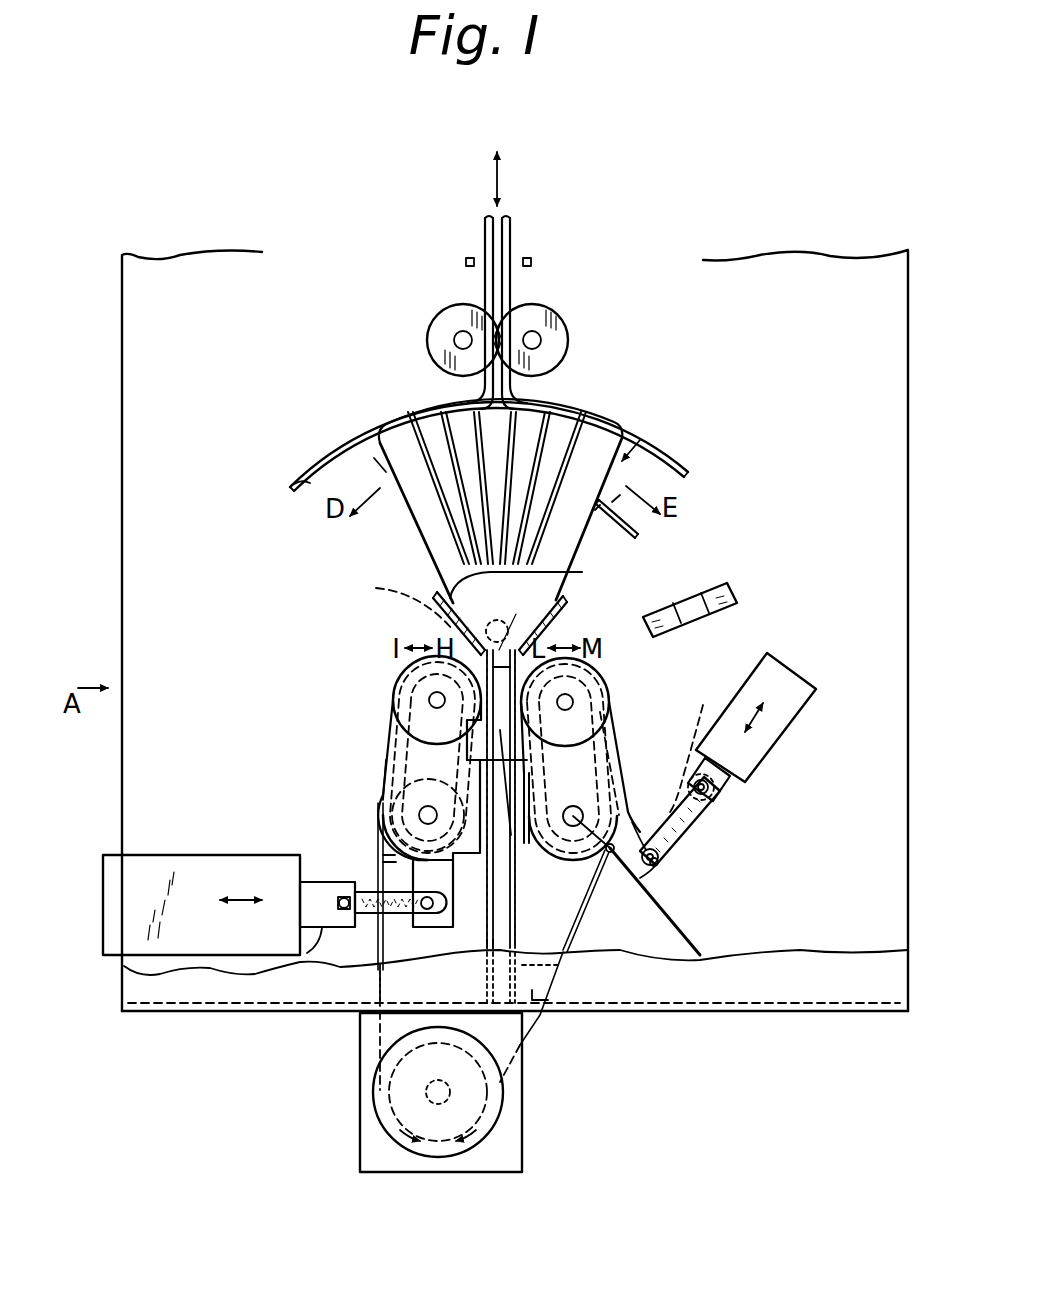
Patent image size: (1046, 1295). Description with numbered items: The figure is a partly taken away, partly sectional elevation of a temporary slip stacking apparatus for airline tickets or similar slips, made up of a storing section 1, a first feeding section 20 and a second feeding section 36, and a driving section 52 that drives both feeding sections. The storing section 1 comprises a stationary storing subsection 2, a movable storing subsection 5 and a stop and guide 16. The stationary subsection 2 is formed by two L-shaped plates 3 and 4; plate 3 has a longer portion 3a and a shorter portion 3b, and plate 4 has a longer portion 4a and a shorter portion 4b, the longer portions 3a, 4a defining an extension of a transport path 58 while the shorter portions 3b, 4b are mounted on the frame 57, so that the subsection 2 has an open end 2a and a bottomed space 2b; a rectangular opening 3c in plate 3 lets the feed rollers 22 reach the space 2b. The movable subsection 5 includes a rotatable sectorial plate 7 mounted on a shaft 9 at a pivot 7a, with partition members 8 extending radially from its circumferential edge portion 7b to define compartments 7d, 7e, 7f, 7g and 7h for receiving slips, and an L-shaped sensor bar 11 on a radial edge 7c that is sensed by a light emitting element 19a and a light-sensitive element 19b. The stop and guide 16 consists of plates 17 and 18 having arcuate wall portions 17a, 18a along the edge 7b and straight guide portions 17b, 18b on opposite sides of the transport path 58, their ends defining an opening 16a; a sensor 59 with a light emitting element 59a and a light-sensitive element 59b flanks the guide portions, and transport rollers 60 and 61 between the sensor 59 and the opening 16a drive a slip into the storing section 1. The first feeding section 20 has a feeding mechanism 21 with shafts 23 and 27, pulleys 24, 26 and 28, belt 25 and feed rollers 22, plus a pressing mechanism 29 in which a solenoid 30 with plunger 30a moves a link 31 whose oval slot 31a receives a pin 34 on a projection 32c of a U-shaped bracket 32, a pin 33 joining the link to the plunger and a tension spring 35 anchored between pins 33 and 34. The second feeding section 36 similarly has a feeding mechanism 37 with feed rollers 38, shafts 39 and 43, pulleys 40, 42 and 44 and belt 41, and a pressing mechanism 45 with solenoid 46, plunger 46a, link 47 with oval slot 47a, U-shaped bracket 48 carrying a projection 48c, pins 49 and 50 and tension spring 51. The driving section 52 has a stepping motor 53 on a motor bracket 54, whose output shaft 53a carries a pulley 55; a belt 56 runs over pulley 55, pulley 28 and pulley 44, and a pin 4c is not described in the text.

The storing section 1 is at (746, 419).
The stationary storing subsection 2 is at (618, 570).
The open end 2a is at (526, 620).
The bottomed space 2b is at (562, 966).
The plate 3 is at (582, 580).
The longer portion 3a is at (484, 926).
The shorter portion 3b is at (478, 1000).
The rectangular opening 3c is at (516, 892).
The plate 4 is at (545, 606).
The longer portion 4a is at (518, 922).
The shorter portion 4b is at (548, 1000).
The pivot pin 4c is at (606, 860).
The movable storing subsection 5 is at (640, 440).
The sectorial plate 7 is at (412, 493).
The pivot 7a is at (459, 620).
The circumferential edge portion 7b is at (594, 418).
The radial edge 7c is at (643, 541).
The compartment 7d is at (563, 415).
The compartment 7e is at (577, 400).
The compartment 7f is at (487, 400).
The compartment 7g is at (470, 408).
The compartment 7h is at (400, 410).
The partition members 8 is at (440, 500).
The rotatable shaft 9 is at (800, 520).
The sensor bar 11 is at (605, 515).
The stop and guide 16 is at (608, 240).
The opening 16a is at (480, 396).
The plate 17 is at (494, 280).
The arcuate wall portion 17a is at (300, 487).
The straight guide portion 17b is at (484, 226).
The plate 18 is at (511, 300).
The arcuate wall portion 18a is at (645, 447).
The straight guide portion 18b is at (512, 232).
The light emitting element 19a is at (683, 597).
The light-sensitive element 19b is at (730, 583).
The first feeding section 20 is at (137, 600).
The feeding mechanism 21 is at (325, 642).
The feed rollers 22 is at (405, 690).
The shaft 23 is at (432, 697).
The intermediate pulley 24 is at (398, 706).
The belt 25 is at (410, 730).
The intermediate pulley 26 is at (403, 820).
The shaft 27 is at (420, 812).
The intermediate pulley 28 is at (383, 792).
The pressing mechanism 29 is at (240, 760).
The solenoid 30 is at (192, 855).
The plunger 30a is at (307, 953).
The link 31 is at (384, 930).
The oval slot 31a is at (408, 866).
The U-shaped bracket 32 is at (393, 753).
The projection 32c is at (396, 858).
The pin 33 is at (347, 913).
The pin 34 is at (427, 910).
The tension spring 35 is at (346, 910).
The second feeding section 36 is at (828, 633).
The feeding mechanism 37 is at (700, 657).
The feed rollers 38 is at (600, 690).
The shaft 39 is at (572, 700).
The pulley 40 is at (605, 712).
The belt 41 is at (600, 756).
The pulley 42 is at (620, 805).
The shaft 43 is at (690, 935).
The pulley 44 is at (610, 772).
The pressing mechanism 45 is at (723, 698).
The solenoid 46 is at (795, 728).
The plunger 46a is at (725, 795).
The link 47 is at (698, 840).
The oval slot 47a is at (660, 866).
The U-shaped bracket 48 is at (600, 740).
The projection 48c is at (640, 878).
The pin 49 is at (712, 790).
The pin 50 is at (660, 859).
The tension spring 51 is at (688, 746).
The driving section 52 is at (560, 1116).
The stepping motor 53 is at (490, 1128).
The output shaft 53a is at (426, 1092).
The motor bracket 54 is at (524, 1090).
The pulley 55 is at (392, 1118).
The belt 56 is at (544, 1022).
The frame 57 is at (760, 1013).
The transport path 58 is at (500, 218).
The sensor 59 is at (370, 225).
The light emitting element 59a is at (522, 262).
The light-sensitive element 59b is at (465, 262).
The transport roller 60 is at (438, 322).
The transport roller 61 is at (552, 320).